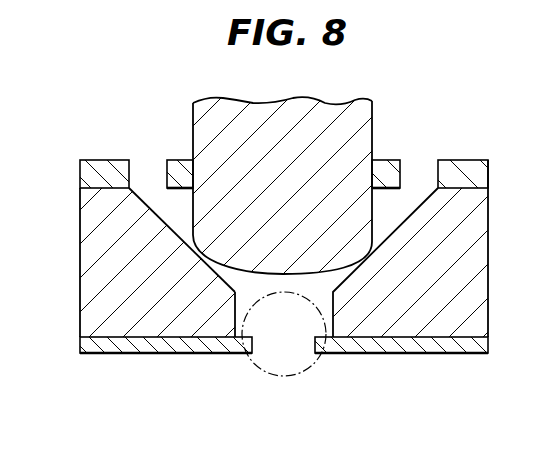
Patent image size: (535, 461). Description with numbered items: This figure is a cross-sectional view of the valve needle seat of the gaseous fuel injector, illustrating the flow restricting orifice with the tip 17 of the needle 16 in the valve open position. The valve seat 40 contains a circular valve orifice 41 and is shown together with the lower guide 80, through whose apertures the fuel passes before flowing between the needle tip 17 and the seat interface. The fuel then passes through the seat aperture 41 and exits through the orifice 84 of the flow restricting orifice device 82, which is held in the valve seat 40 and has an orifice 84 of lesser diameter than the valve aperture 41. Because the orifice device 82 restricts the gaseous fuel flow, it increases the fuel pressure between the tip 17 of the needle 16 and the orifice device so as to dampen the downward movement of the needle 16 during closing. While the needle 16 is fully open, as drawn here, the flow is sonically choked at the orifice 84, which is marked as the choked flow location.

The needle 16 is at (293, 110).
The tip 17 is at (362, 140).
The valve seat 40 is at (80, 257).
The valve orifice 41 is at (262, 314).
The lower guide 80 is at (98, 160).
The flow restricting orifice device 82 is at (455, 356).
The orifice 84 is at (280, 358).